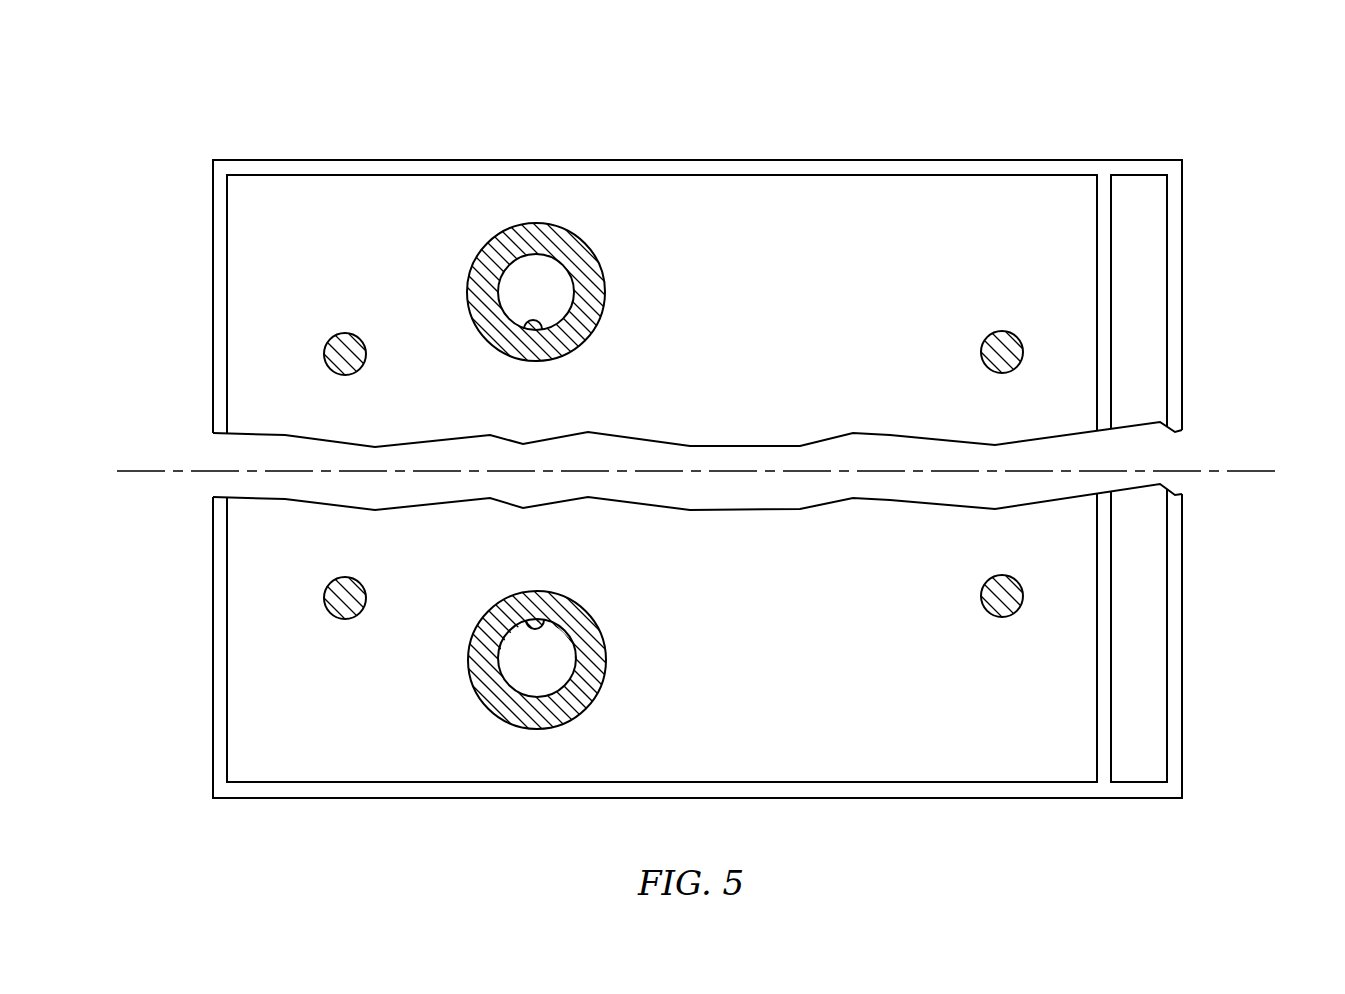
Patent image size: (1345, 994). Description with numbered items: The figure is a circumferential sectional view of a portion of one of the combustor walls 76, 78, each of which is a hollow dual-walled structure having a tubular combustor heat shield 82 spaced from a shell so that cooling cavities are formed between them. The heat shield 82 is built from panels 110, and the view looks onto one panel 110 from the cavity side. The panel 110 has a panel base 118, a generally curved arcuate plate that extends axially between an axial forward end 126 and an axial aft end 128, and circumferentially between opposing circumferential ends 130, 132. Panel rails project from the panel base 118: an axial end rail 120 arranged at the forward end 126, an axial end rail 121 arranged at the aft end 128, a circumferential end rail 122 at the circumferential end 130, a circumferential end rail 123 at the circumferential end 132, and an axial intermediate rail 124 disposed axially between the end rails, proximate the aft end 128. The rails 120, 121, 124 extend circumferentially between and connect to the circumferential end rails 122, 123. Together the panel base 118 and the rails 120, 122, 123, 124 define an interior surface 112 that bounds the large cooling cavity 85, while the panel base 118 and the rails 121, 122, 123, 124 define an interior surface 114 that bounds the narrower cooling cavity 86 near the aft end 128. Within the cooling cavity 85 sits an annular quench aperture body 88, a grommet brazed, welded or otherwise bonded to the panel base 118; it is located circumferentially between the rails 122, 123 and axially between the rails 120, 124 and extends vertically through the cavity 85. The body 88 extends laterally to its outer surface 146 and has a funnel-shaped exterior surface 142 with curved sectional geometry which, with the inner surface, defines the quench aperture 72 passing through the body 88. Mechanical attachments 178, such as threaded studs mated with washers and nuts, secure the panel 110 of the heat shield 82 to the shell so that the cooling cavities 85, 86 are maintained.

The combustor wall 76 is at (1205, 128).
The combustor wall 78 is at (697, 646).
The axial end rail 120 is at (218, 248).
The axial forward end 126 is at (210, 298).
The circumferential end rail 122 is at (381, 170).
The circumferential end 130 is at (418, 160).
The quench aperture body 88 is at (581, 475).
The quench aperture 72 is at (550, 305).
The outer surface 146 is at (593, 305).
The exterior surface 142 is at (524, 330).
The mechanical attachment 178 is at (367, 357).
The cooling cavity 85 is at (783, 296).
The axial intermediate rail 124 is at (1105, 252).
The combustor heat shield 82 is at (1190, 265).
The panel 110 is at (1139, 635).
The axial end rail 121 is at (1175, 292).
The axial aft end 128 is at (1183, 343).
The cooling cavity 86 is at (1155, 336).
The circumferential end rail 123 is at (360, 790).
The circumferential end 132 is at (400, 800).
The panel base 118 is at (846, 765).
The interior surface 112 is at (930, 742).
The interior surface 114 is at (1140, 755).